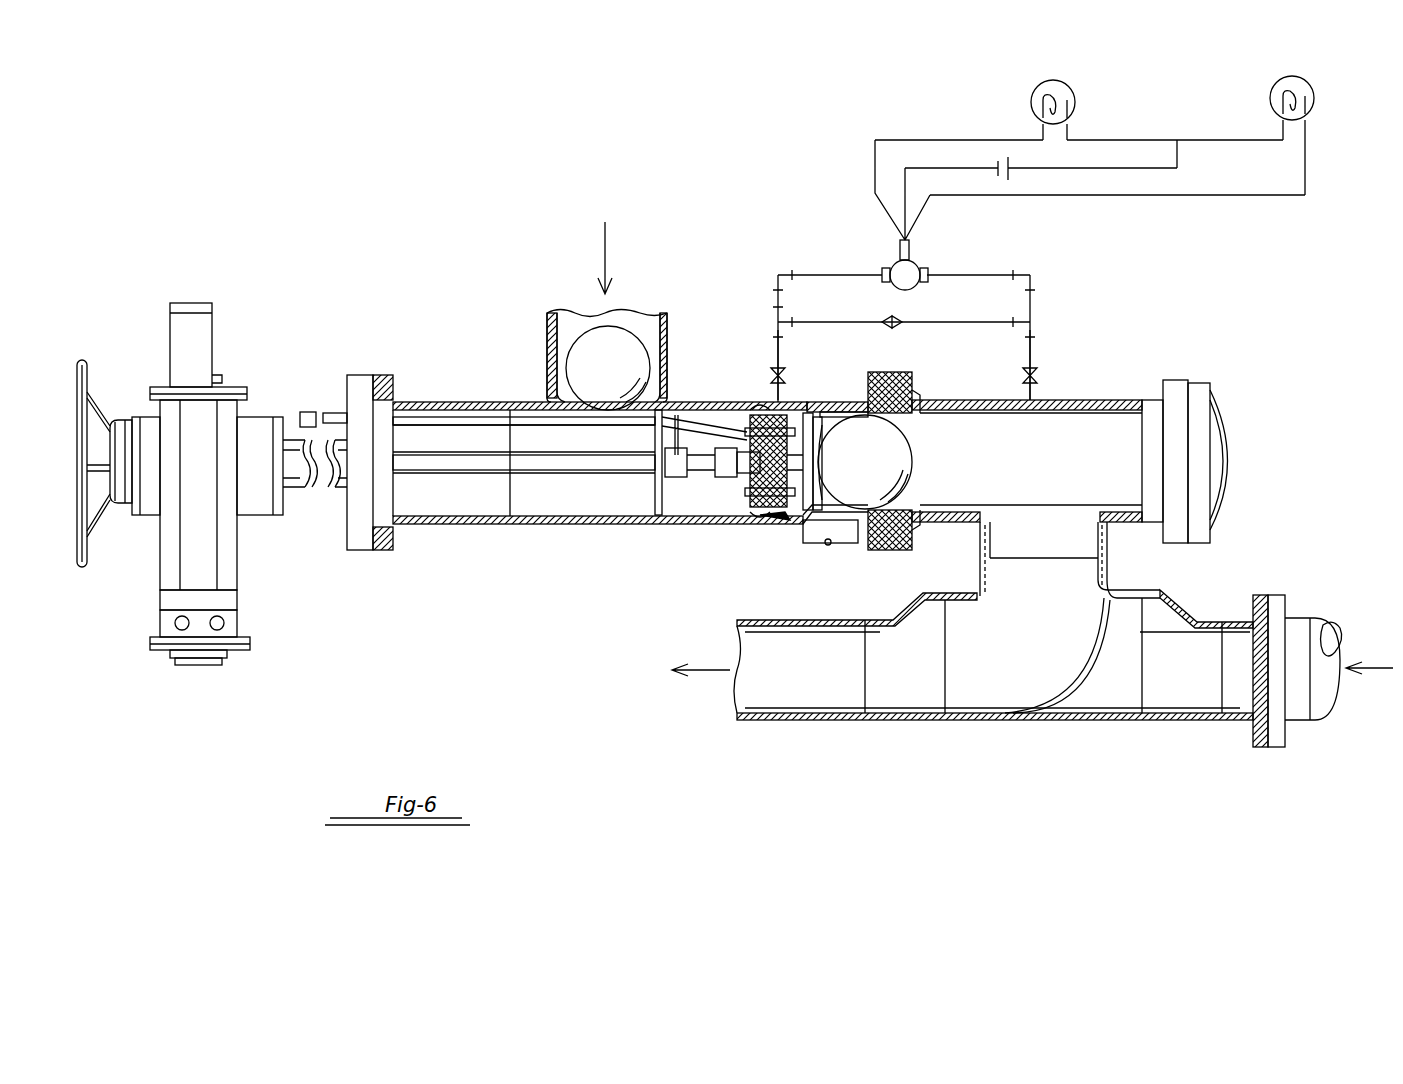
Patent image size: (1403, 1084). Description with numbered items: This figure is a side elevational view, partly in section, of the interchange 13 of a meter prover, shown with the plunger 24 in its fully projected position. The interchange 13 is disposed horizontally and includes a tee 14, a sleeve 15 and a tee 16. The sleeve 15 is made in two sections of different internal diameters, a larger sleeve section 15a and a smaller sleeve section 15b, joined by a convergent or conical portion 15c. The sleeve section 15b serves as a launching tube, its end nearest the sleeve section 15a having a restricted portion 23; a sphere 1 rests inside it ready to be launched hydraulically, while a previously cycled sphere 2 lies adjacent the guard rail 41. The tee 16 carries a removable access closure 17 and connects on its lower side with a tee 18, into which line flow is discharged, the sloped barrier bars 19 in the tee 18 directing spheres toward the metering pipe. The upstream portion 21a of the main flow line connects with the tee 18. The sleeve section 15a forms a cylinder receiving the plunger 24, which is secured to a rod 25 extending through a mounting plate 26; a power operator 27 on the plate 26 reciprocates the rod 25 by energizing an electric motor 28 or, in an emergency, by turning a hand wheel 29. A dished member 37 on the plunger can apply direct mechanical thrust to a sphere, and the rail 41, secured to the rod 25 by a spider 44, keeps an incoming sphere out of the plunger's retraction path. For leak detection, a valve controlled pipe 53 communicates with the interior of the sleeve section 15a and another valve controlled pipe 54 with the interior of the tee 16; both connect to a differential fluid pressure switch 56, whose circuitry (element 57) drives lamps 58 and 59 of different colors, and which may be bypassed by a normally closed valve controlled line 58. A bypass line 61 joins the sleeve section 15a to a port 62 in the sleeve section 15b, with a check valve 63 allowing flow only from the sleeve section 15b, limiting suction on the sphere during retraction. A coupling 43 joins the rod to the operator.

The sphere 1 is at (880, 447).
The sphere 2 is at (614, 364).
The interchange 13 is at (792, 537).
The tee 14 is at (620, 524).
The sleeve 15 is at (762, 402).
The sleeve section 15a is at (738, 404).
The sleeve section 15b is at (852, 412).
The convergent portion 15c is at (802, 403).
The tee 16 is at (1093, 400).
The removable access closure 17 is at (1230, 445).
The tee 18 is at (985, 722).
The barrier bars 19 is at (1072, 685).
The upstream portion of main flow line 21a is at (1320, 615).
The restricted portion 23 is at (825, 415).
The plunger 24 is at (760, 515).
The rod 25 is at (558, 470).
The mounting plate 26 is at (360, 372).
The power operator 27 is at (142, 418).
The electric motor 28 is at (162, 618).
The hand wheel 29 is at (84, 362).
The dished member 37 is at (865, 462).
The rod or rail 41 is at (468, 418).
The coupling 43 is at (308, 410).
The spider 44 is at (655, 500).
The valve controlled pipe 53 is at (776, 348).
The valve controlled pipe 54 is at (1028, 352).
The differential fluid pressure switch 56 is at (896, 265).
The switch actuator 57 is at (900, 245).
The lamp 58 is at (1075, 102).
The lamp 59 is at (1272, 98).
The bypass line 61 is at (828, 545).
The port 62 is at (868, 512).
The check valve 63 is at (830, 546).